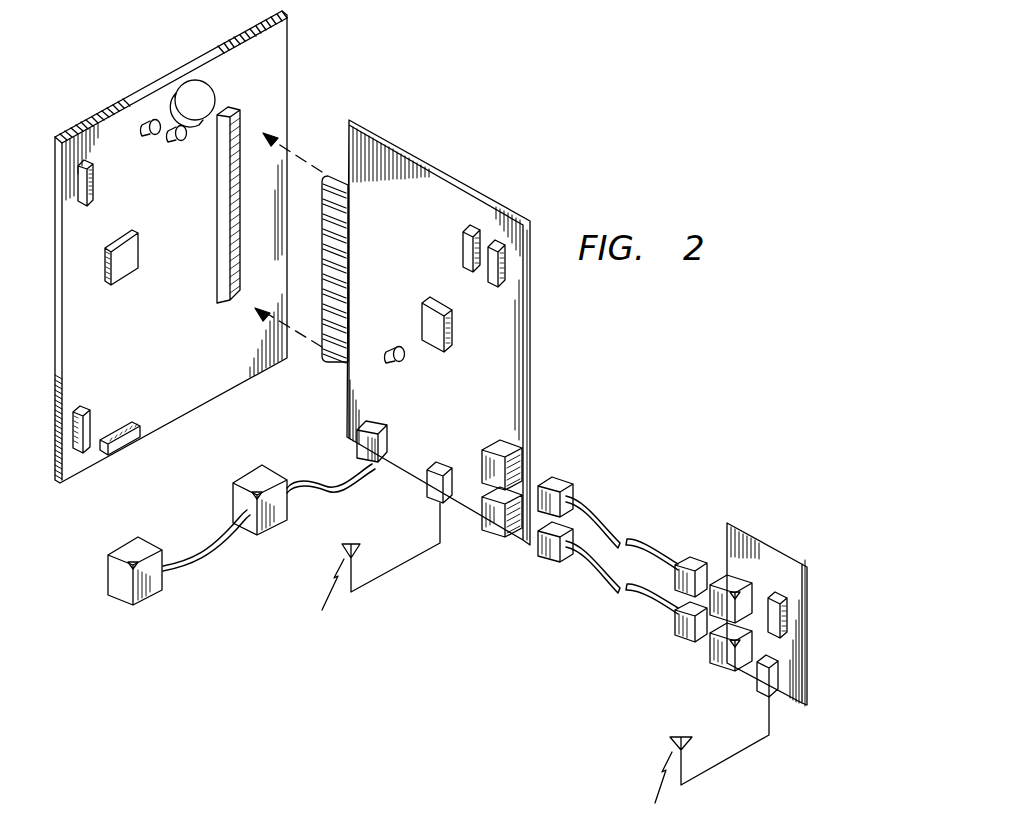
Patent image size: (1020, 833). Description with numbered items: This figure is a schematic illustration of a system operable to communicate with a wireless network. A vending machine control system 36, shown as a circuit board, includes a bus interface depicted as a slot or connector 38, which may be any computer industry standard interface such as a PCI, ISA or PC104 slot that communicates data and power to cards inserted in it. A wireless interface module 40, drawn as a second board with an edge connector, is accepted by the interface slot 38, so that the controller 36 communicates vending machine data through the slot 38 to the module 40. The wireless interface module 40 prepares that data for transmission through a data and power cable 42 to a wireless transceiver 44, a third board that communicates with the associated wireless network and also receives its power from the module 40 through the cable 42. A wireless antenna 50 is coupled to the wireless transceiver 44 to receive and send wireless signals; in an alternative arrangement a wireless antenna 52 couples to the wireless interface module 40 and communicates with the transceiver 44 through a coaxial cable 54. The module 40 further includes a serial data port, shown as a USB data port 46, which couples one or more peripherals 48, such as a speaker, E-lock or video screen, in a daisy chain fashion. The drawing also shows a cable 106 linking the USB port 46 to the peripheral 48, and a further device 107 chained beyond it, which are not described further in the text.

The vending machine control system 36 is at (168, 70).
The interface slot 38 is at (217, 203).
The wireless interface module 40 is at (450, 176).
The data cable 42 is at (646, 543).
The wireless transceiver 44 is at (775, 543).
The USB data port 46 is at (357, 446).
The peripheral 48 is at (240, 500).
The wireless antenna 50 is at (692, 742).
The wireless antenna 52 is at (362, 548).
The coaxial cable 54 is at (596, 582).
The cable 106 is at (320, 490).
The connector box 107 is at (128, 548).